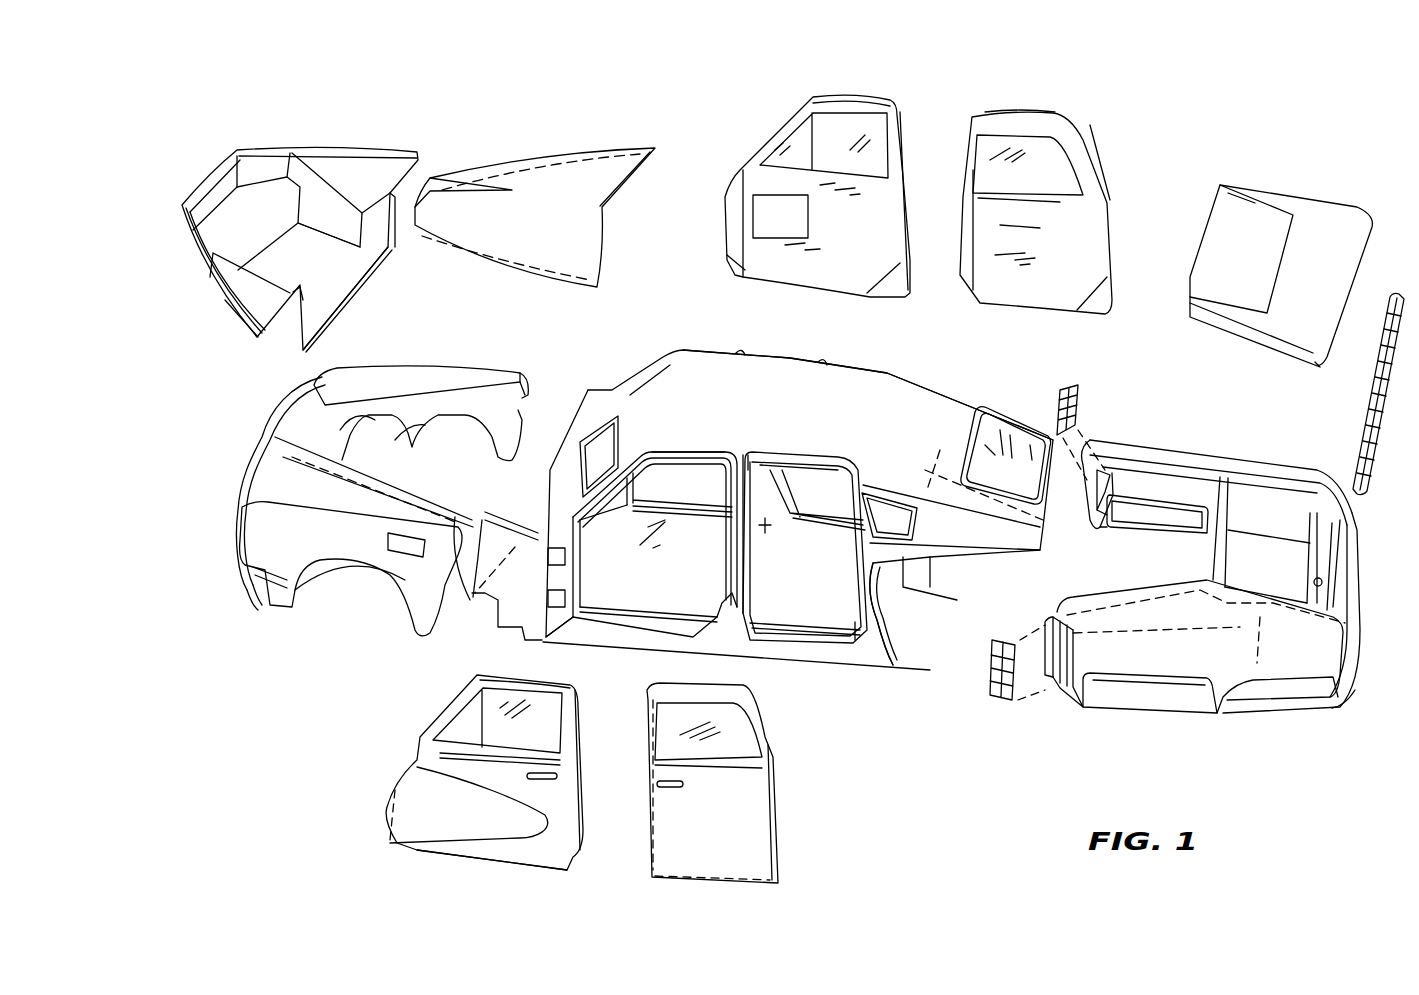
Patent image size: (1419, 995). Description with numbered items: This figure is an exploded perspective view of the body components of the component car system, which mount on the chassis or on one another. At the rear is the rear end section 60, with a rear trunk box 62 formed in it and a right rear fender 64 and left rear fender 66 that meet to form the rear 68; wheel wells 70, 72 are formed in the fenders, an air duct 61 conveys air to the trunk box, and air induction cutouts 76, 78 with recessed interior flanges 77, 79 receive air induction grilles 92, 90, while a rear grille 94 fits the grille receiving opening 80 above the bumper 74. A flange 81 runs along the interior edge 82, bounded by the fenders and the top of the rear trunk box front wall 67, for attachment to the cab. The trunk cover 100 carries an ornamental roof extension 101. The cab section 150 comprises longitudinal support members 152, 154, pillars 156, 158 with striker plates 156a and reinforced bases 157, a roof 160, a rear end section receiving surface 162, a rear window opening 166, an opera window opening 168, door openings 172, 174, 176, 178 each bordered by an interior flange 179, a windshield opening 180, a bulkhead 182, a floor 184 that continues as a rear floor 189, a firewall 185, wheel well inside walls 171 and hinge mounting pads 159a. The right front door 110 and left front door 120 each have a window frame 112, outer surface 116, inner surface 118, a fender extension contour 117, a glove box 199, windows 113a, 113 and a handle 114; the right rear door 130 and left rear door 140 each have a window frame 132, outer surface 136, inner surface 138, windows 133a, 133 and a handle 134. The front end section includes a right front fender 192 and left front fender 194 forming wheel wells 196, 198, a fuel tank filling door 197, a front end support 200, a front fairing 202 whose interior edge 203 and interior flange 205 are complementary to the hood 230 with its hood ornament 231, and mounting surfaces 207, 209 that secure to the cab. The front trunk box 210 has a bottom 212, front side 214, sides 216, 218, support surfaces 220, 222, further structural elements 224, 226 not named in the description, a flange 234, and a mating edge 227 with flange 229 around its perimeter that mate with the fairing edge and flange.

The rear end section 60 is at (1203, 561).
The air duct 61 is at (1230, 660).
The rear trunk box 62 is at (1285, 530).
The right rear fender 64 is at (1330, 475).
The left rear fender 66 is at (1287, 660).
The rear trunk box front wall 67 is at (1225, 550).
The rear 68 is at (1355, 607).
The wheel well 70 is at (1095, 490).
The wheel well 72 is at (1105, 685).
The bumper 74 is at (1352, 690).
The air induction cutout 76 is at (1097, 480).
The recessed interior flange 77 is at (1090, 516).
The air induction cutout 78 is at (1063, 690).
The recessed interior flange 79 is at (1050, 618).
The grille receiving opening 80 is at (1355, 553).
The flange 81 is at (1193, 465).
The interior edge 82 is at (1225, 478).
The air induction grille 90 is at (1003, 690).
The air induction grille 92 is at (1080, 393).
The rear grille 94 is at (1395, 294).
The trunk cover 100 is at (1335, 213).
The ornamental roof extension 101 is at (1238, 212).
The right front door 110 is at (752, 160).
The window frame 112 is at (560, 713).
The window 113 is at (470, 708).
The window 113a is at (830, 140).
The handle 114 is at (570, 790).
The outer surface 116 is at (540, 852).
The fender extension contour 117 is at (395, 845).
The inner surface 118 is at (757, 277).
The left front door 120 is at (465, 850).
The right rear door 130 is at (1013, 111).
The window frame 132 is at (765, 740).
The window 133 is at (725, 750).
The window 133a is at (1060, 178).
The handle 134 is at (652, 782).
The outer surface 136 is at (670, 855).
The inner surface 138 is at (1085, 225).
The left rear door 140 is at (745, 860).
The cab section 150 is at (758, 413).
The longitudinal support member 152 is at (818, 661).
The longitudinal support member 154 is at (838, 523).
The pillar 156 is at (730, 539).
The striker plate 156a is at (745, 571).
The reinforced base 157 is at (763, 517).
The pillar 158 is at (773, 474).
The hinge mounting pad 159a is at (558, 600).
The roof 160 is at (890, 372).
The rear end section receiving surface 162 is at (910, 630).
The rear window opening 166 is at (990, 428).
The opera window opening 168 is at (893, 505).
The wheel well inside wall 171 is at (938, 595).
The door opening 172 is at (690, 455).
The door opening 174 is at (832, 468).
The door opening 176 is at (738, 354).
The door opening 178 is at (815, 358).
The interior flange 179 is at (720, 455).
The windshield opening 180 is at (614, 393).
The bulkhead 182 is at (490, 483).
The floor 184 is at (670, 590).
The firewall 185 is at (553, 436).
The rear floor 189 is at (987, 528).
The right front fender 192 is at (365, 413).
The left front fender 194 is at (308, 545).
The wheel well 196 is at (405, 420).
The fuel tank filling door 197 is at (388, 542).
The wheel well 198 is at (347, 560).
The glove box 199 is at (800, 218).
The front end support 200 is at (235, 575).
The front fairing 202 is at (238, 468).
The interior edge 203 is at (445, 372).
The interior flange 205 is at (440, 392).
The mounting surface 207 is at (520, 373).
The mounting surface 209 is at (530, 398).
The front trunk box 210 is at (297, 148).
The bottom 212 is at (327, 280).
The front side 214 is at (218, 178).
The side 216 is at (283, 322).
The side 218 is at (420, 183).
The support surface 220 is at (213, 278).
The support surface 222 is at (393, 165).
The left wall 224 is at (220, 225).
The partition 226 is at (330, 213).
The mating edge 227 is at (243, 330).
The flange 229 is at (225, 310).
The hood 230 is at (560, 163).
The hood ornament 231 is at (470, 183).
The flange 234 is at (390, 235).